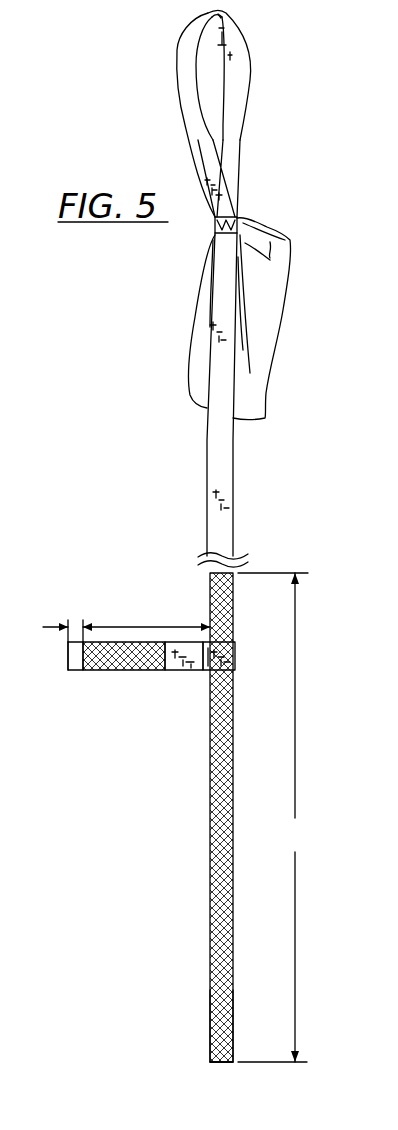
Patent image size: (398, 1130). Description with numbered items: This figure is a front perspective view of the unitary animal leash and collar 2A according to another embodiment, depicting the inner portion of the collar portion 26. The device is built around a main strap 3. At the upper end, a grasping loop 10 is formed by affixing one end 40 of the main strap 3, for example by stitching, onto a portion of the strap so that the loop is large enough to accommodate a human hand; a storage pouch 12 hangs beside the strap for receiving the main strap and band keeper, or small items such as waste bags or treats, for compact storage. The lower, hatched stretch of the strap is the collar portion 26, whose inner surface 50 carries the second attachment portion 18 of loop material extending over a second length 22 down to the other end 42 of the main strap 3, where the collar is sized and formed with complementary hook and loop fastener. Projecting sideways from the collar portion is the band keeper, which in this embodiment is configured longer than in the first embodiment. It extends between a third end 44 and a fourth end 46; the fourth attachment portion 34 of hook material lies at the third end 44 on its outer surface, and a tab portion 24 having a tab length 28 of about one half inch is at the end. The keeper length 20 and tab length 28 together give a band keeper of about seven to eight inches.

The grasping loop 10 is at (252, 62).
The one end of the main strap 40 is at (260, 118).
The storage pouch 12 is at (275, 317).
The main strap 3 is at (210, 478).
The unitary animal leash and collar 2A is at (271, 477).
The length of the band keeper 20 is at (175, 626).
The length of the tab portion 28 is at (56, 626).
The third end 44 is at (56, 643).
The tab portion 24 is at (68, 658).
The fourth attachment portion 34 is at (125, 670).
The inner surface 50 is at (178, 663).
The fourth end 46 is at (245, 658).
The second length 22 is at (284, 846).
The second attachment portion 18 is at (208, 923).
The collar portion 26 is at (168, 997).
The other end of the main strap 42 is at (206, 1069).